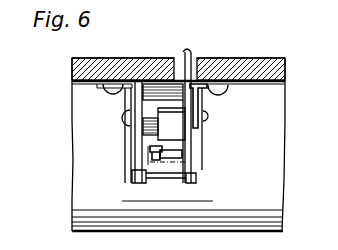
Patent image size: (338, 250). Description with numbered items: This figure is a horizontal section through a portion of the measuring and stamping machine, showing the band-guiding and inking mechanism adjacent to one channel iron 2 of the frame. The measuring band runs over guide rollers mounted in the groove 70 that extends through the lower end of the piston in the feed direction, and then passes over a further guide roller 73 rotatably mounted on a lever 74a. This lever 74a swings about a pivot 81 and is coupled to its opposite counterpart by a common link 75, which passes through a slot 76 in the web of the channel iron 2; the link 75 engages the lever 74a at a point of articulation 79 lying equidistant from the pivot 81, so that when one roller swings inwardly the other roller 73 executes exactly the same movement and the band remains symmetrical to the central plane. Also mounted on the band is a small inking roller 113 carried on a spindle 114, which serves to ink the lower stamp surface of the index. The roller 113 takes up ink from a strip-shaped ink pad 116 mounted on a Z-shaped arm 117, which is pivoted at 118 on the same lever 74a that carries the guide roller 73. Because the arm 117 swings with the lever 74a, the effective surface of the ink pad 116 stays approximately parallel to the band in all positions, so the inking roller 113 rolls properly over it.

The channel iron 2 is at (281, 58).
The groove 70 is at (157, 103).
The guide roller 73 is at (199, 128).
The lever 74a is at (133, 139).
The link 75 is at (191, 52).
The slot 76 is at (183, 54).
The point of articulation 79 is at (203, 103).
The pivot 81 is at (121, 117).
The inking roller 113 is at (150, 150).
The spindle 114 is at (178, 160).
The ink pad 116 is at (172, 163).
The Z-shaped arm 117 is at (143, 180).
The pivot 118 is at (193, 178).